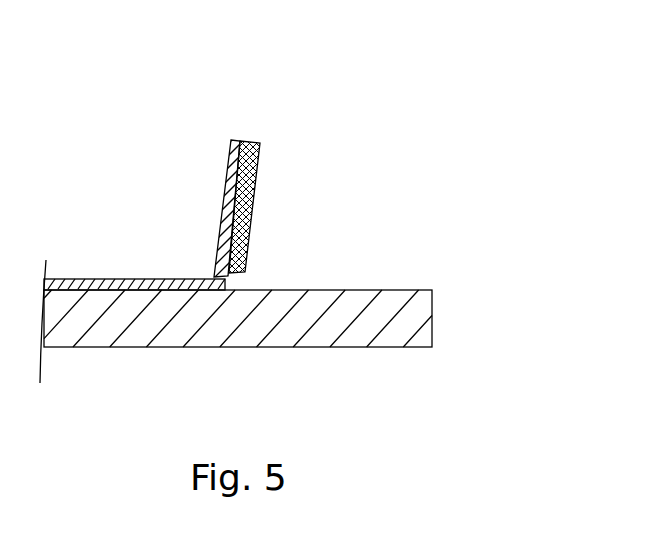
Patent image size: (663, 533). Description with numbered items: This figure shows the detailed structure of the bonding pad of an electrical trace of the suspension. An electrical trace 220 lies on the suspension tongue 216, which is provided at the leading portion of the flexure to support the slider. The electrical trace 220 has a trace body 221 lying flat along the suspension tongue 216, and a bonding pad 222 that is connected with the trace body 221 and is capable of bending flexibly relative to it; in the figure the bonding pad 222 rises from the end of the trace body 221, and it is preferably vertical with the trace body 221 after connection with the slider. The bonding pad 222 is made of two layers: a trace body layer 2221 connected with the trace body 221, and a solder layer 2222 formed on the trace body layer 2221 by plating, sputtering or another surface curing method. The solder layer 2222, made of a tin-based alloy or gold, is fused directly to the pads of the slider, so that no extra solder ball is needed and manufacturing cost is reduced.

The suspension tongue 216 is at (407, 323).
The electrical trace 220 is at (79, 272).
The trace body 221 is at (155, 285).
The bonding pad 222 is at (231, 146).
The trace body layer 2221 is at (232, 152).
The solder layer 2222 is at (249, 149).